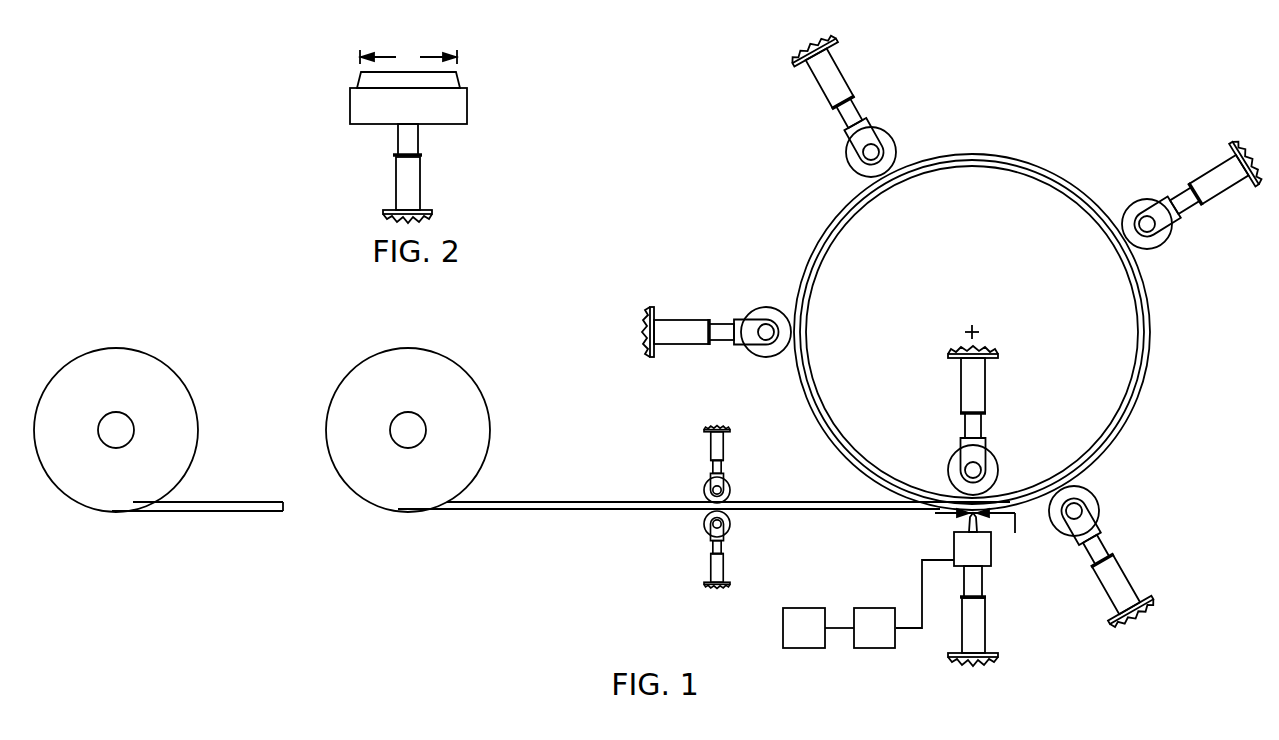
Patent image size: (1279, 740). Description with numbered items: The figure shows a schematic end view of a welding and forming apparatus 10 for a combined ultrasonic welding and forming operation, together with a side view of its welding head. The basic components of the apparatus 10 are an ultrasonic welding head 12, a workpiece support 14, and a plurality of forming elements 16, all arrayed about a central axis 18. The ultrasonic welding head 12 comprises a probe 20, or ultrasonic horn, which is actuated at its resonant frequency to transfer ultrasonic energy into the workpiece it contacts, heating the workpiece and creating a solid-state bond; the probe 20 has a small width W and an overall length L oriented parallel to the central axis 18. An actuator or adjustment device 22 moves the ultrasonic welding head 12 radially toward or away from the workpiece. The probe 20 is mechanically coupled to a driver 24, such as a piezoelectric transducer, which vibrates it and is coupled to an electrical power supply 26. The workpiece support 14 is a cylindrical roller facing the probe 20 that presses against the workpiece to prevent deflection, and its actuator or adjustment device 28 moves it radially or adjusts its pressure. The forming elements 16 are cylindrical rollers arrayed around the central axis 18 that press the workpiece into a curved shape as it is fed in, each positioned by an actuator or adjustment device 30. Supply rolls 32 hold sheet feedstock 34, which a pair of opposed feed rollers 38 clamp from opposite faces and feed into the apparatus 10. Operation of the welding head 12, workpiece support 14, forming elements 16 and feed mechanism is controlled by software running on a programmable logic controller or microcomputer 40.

In FIG. 1, the welding and forming apparatus 10 is at (1032, 92).
In FIG. 1, the ultrasonic welding head 12 is at (936, 587).
In FIG. 1, the workpiece support 14 is at (995, 420).
In FIG. 1, the forming elements 16 is at (771, 311).
In FIG. 1, the central axis 18 is at (980, 327).
In FIG. 1, the probe 20 is at (963, 518).
In FIG. 2, the probe 20 is at (455, 80).
In FIG. 1, the actuator or adjustment device 22 is at (980, 610).
In FIG. 1, the driver 24 is at (985, 562).
In FIG. 2, the driver 24 is at (460, 105).
In FIG. 1, the electrical power supply 26 is at (888, 641).
In FIG. 1, the actuator or adjustment device 28 is at (973, 394).
In FIG. 1, the actuator or adjustment device 30 is at (686, 335).
In FIG. 1, the supply roll 32 is at (101, 395).
In FIG. 1, the feedstock 34 is at (207, 508).
In FIG. 1, the feed rollers 38 is at (722, 470).
In FIG. 1, the microcomputer 40 is at (790, 641).